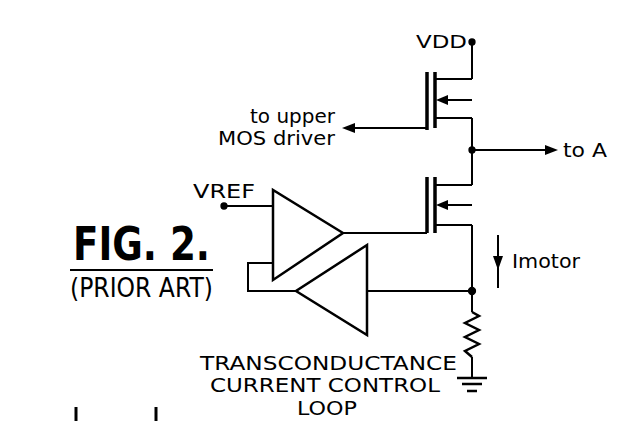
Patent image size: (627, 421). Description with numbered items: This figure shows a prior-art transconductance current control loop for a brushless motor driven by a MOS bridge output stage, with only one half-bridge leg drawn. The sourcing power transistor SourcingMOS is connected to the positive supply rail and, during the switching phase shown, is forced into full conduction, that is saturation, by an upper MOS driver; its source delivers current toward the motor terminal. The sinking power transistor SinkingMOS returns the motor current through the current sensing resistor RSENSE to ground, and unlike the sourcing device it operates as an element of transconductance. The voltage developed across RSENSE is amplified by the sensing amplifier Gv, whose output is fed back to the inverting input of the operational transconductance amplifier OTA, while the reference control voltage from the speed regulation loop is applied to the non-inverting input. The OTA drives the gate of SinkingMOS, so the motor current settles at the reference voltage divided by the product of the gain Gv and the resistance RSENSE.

The sourcing power transistor SourcingMOS is at (500, 128).
The sinking power transistor SinkingMOS is at (493, 244).
The current sensing resistor RSENSE is at (524, 345).
The operational transconductance amplifier OTA is at (350, 235).
The sensing amplifier Gv is at (307, 290).